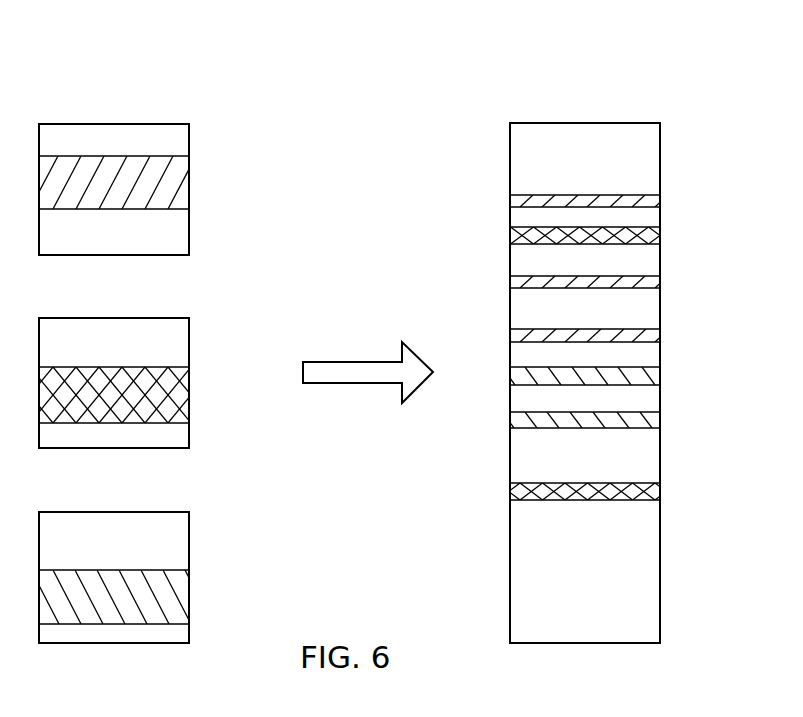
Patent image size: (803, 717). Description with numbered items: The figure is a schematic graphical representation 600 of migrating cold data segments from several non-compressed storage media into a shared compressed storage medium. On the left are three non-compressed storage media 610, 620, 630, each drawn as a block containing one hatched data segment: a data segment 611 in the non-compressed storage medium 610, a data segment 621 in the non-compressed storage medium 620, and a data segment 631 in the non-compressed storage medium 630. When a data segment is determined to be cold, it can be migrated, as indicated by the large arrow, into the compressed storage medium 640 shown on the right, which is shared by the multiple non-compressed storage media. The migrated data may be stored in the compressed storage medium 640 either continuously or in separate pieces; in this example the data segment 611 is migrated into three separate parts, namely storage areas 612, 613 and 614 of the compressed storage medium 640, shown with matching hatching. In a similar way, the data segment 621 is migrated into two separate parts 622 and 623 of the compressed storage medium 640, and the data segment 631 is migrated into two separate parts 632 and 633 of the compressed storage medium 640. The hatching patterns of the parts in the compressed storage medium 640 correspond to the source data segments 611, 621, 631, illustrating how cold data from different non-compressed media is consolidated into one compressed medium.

The method of forming a multilayer stack 600 is at (282, 68).
The non-compressed storage medium 610 is at (112, 124).
The data segment 611 is at (189, 183).
The non-compressed storage medium 620 is at (112, 318).
The data segment 621 is at (189, 394).
The non-compressed storage medium 630 is at (112, 512).
The data segment 631 is at (189, 594).
The compressed storage medium 640 is at (582, 123).
The storage area 612 is at (660, 198).
The storage area 613 is at (660, 279).
The storage area 614 is at (660, 332).
The separate part 622 is at (660, 231).
The separate part 623 is at (660, 488).
The separate part 632 is at (660, 372).
The separate part 633 is at (660, 417).